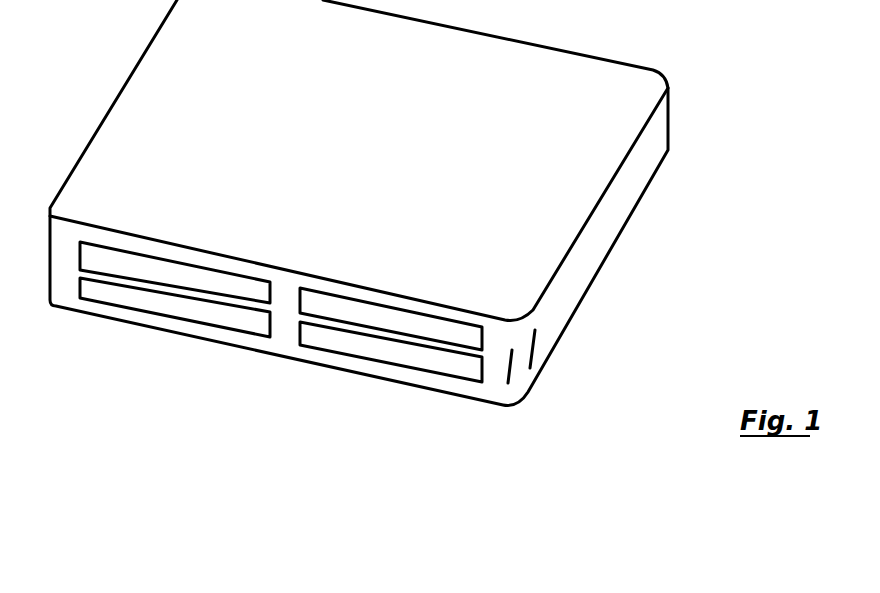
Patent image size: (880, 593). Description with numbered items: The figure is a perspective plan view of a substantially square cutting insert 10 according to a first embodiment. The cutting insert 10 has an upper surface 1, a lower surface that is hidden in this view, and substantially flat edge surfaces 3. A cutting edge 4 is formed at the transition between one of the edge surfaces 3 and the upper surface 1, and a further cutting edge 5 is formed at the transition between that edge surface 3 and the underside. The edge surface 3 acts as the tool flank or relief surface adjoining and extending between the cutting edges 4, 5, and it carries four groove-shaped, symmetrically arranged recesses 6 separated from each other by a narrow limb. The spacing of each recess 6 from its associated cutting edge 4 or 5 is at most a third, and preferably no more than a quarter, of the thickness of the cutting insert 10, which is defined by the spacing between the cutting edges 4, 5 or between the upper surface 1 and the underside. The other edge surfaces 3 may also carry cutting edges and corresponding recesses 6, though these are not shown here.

The upper surface 1 is at (370, 247).
The edge surface 3 is at (286, 302).
The cutting edge 4 is at (216, 245).
The cutting edge 5 is at (203, 338).
The groove-shaped recess 6 is at (378, 317).
The cutting insert 10 is at (370, 285).